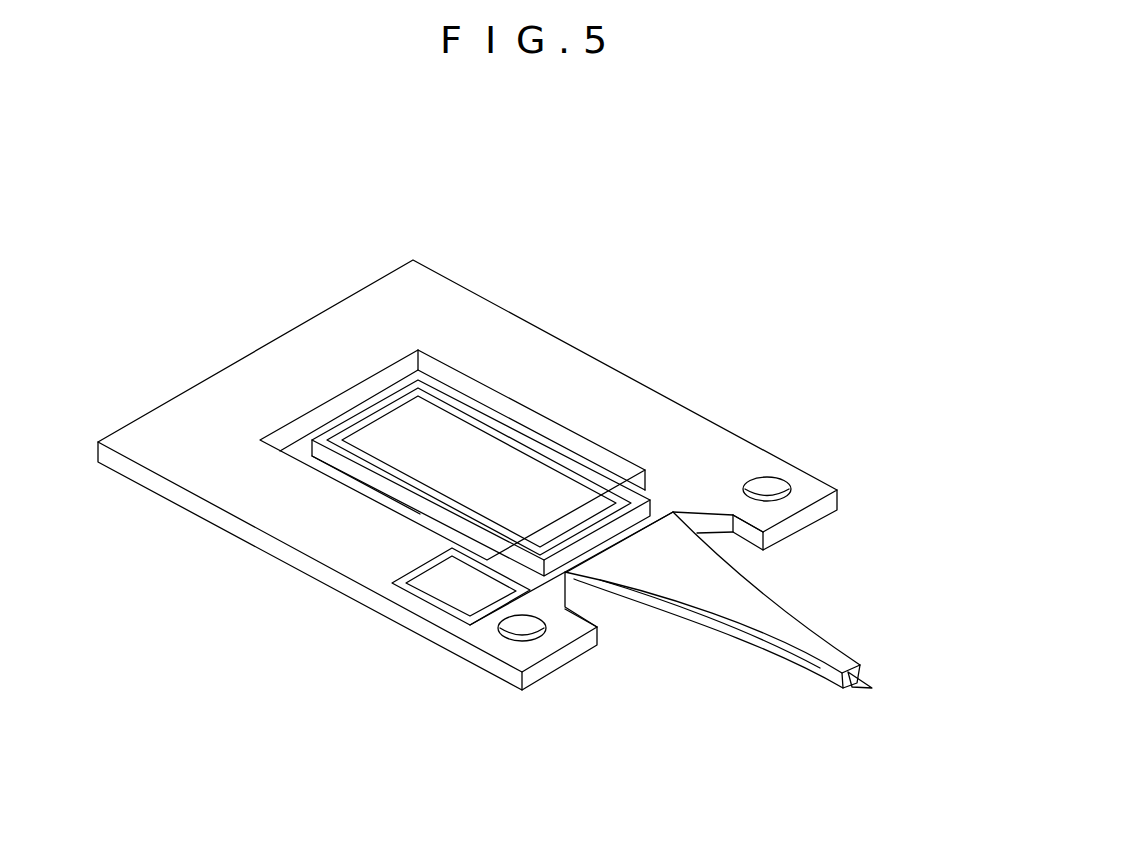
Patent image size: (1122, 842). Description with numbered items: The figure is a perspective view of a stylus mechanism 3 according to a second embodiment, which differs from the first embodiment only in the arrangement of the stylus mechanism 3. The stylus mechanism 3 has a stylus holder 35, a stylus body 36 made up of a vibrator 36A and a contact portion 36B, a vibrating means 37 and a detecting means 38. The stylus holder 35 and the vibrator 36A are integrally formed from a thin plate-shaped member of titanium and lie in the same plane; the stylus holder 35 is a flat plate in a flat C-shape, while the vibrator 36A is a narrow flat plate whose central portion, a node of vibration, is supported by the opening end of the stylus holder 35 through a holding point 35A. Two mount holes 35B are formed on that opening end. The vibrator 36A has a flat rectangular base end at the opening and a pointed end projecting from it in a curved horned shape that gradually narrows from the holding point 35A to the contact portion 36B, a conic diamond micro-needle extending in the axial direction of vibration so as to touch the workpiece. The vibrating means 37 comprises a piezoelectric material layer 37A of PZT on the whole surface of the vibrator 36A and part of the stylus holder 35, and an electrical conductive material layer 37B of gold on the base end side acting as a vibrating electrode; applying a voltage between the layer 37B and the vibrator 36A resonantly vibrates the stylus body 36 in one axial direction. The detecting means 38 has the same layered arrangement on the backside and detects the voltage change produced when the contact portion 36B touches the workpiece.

The stylus mechanism 3 is at (503, 245).
The stylus holder 35 is at (548, 370).
The holding point 35A is at (670, 505).
The mount holes 35B is at (770, 482).
The stylus body 36 is at (800, 607).
The vibrator 36A is at (367, 480).
The contact portion 36B is at (868, 680).
The vibrating means 37 is at (797, 250).
The piezoelectric material layer 37A is at (523, 477).
The electrical conductive material layer 37B is at (647, 547).
The detecting means 38 is at (628, 578).